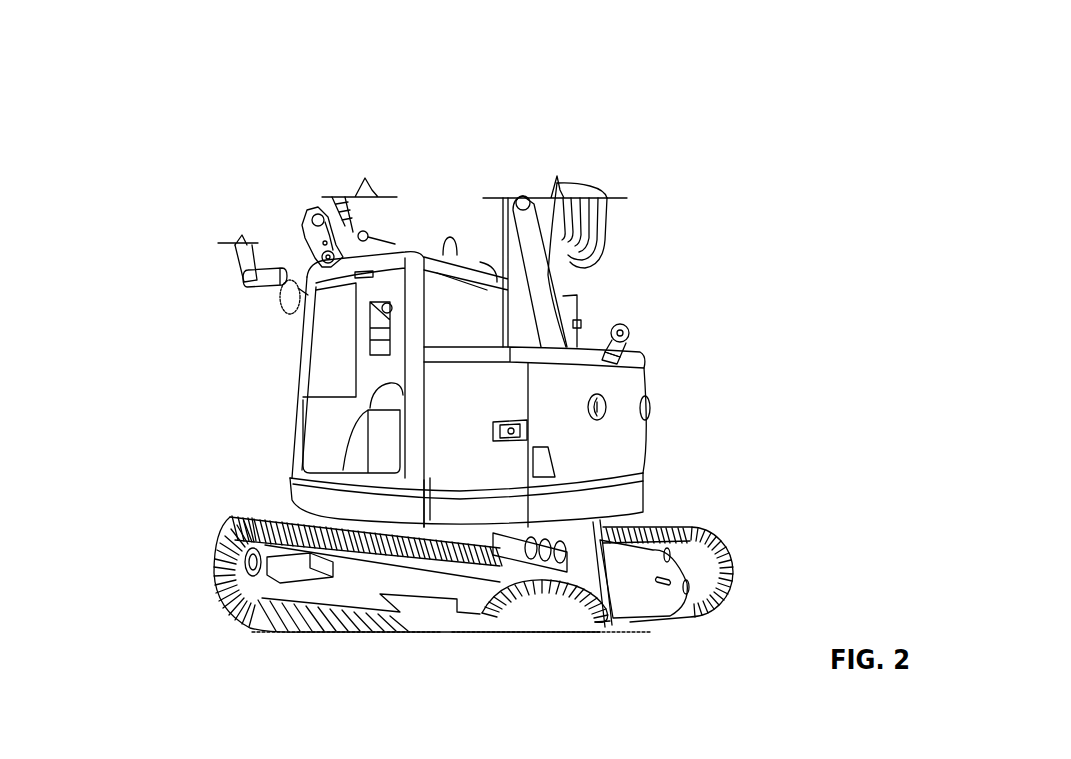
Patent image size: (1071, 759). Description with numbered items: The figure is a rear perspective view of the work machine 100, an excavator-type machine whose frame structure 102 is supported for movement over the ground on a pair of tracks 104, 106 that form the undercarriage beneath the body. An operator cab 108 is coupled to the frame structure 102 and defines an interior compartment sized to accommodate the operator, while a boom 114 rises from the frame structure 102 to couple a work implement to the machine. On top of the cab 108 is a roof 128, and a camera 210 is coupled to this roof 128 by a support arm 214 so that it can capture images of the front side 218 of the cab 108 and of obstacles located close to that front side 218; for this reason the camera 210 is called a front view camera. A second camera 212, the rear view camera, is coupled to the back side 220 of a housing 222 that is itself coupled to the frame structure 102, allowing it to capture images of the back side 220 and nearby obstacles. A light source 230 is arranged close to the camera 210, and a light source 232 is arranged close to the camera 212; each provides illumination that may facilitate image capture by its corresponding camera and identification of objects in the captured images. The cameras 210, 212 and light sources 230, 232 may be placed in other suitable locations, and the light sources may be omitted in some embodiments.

The work machine 100 is at (859, 36).
The frame structure 102 is at (597, 500).
The track 104 is at (723, 601).
The track 106 is at (553, 623).
The operator cab 108 is at (430, 453).
The boom 114 is at (505, 205).
The roof 128 is at (412, 240).
The camera 210 is at (380, 48).
The camera 212 is at (683, 88).
The support arm 214 is at (383, 245).
The front side 218 is at (298, 362).
The back side 220 is at (657, 410).
The housing 222 is at (550, 423).
The light source 230 is at (313, 215).
The light source 232 is at (630, 352).